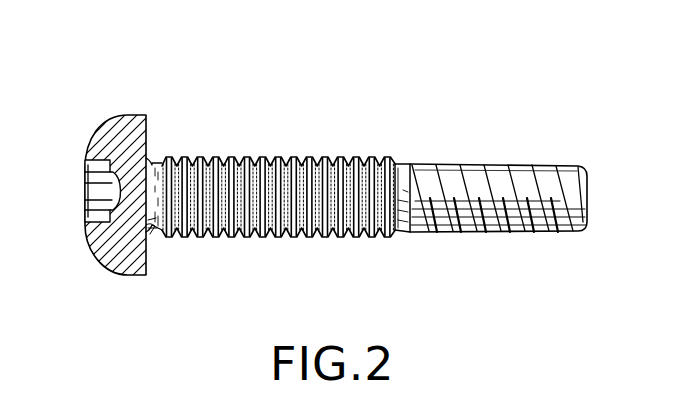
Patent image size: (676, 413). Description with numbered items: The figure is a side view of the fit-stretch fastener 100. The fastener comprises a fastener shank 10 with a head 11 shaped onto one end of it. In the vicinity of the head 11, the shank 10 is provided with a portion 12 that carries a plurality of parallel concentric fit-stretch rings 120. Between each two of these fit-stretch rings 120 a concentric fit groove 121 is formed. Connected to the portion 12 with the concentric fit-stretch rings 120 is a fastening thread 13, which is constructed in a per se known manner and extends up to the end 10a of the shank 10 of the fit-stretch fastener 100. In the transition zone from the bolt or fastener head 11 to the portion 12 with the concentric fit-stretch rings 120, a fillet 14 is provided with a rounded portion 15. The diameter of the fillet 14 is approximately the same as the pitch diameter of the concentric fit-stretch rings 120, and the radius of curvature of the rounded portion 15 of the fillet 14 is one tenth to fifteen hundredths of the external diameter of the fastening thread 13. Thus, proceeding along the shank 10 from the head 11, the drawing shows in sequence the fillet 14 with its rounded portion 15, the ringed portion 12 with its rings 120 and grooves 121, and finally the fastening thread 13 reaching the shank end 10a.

The portion with fit-stretch rings 12 is at (266, 130).
The head 11 is at (113, 130).
The fillet 14 is at (158, 150).
The rounded portion 15 is at (150, 232).
The fit-stretch rings 120 is at (200, 155).
The fit groove 121 is at (316, 238).
The fastener shank 10 is at (396, 172).
The fit-stretch fastener 100 is at (476, 151).
The end of shank 10a is at (524, 184).
The fastening thread 13 is at (513, 230).